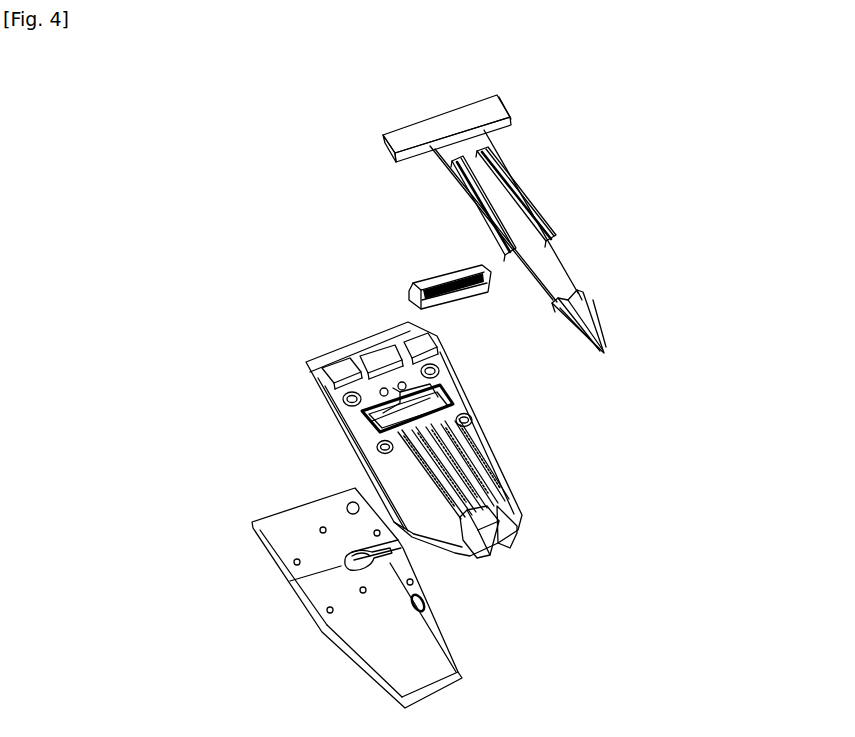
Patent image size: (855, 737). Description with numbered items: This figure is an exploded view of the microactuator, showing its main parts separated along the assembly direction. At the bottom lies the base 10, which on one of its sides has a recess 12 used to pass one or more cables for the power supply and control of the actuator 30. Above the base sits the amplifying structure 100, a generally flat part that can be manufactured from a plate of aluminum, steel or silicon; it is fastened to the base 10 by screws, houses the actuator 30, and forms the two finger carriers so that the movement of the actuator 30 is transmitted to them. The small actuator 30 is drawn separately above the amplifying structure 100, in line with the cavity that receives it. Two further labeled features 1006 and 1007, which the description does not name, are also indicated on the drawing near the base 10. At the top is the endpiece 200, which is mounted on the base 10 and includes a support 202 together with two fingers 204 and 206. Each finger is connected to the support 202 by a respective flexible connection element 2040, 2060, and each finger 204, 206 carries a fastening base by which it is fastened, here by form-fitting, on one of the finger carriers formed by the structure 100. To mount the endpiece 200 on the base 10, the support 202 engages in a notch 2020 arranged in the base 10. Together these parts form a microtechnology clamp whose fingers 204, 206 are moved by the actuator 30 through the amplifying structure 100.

The base 10 is at (423, 602).
The recess 12 is at (354, 568).
The actuator 30 is at (405, 292).
The amplifying structure 100 is at (282, 440).
The endpiece 200 is at (434, 301).
The support 202 is at (503, 103).
The finger 204 is at (608, 322).
The finger 206 is at (583, 345).
The positioning hole 1006 is at (313, 531).
The positioning hole 1007 is at (353, 590).
The notch 2020 is at (318, 371).
The flexible connection element 2040 is at (556, 219).
The flexible connection element 2060 is at (472, 220).